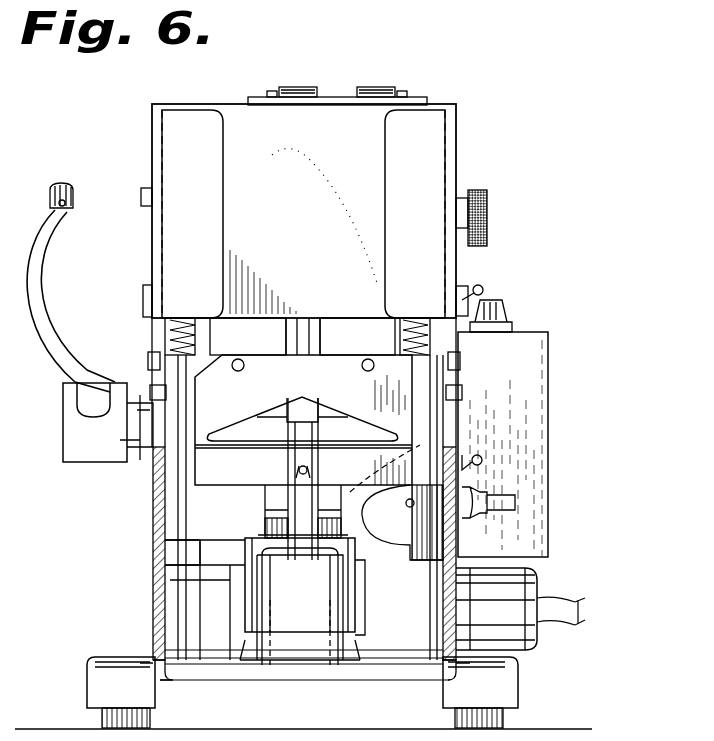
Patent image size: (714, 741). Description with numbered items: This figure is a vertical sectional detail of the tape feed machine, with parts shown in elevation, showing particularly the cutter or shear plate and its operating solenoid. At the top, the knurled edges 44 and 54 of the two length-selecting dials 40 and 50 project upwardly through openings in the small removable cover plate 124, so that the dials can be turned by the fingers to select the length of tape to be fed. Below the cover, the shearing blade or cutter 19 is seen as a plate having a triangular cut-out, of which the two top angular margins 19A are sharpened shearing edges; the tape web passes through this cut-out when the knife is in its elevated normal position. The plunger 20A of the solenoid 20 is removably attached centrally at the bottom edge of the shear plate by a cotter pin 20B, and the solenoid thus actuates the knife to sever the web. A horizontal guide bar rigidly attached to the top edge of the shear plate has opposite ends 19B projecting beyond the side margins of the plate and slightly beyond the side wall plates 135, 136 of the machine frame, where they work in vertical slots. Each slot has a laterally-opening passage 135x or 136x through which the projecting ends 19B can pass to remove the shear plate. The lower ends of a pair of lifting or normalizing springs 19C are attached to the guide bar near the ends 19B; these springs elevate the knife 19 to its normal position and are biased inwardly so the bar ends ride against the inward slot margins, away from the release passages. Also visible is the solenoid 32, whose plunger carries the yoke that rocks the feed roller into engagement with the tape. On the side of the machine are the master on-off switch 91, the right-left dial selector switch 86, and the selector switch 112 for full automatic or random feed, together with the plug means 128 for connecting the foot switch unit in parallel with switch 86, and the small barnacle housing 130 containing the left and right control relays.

The removable cover plate 124 is at (230, 112).
The dial 40 is at (310, 84).
The knurled rim portion 44 is at (272, 91).
The dial 50 is at (381, 78).
The knurled edge 54 is at (405, 90).
The selector switch 112 is at (483, 287).
The side wall plate 135 is at (158, 335).
The side wall plate 136 is at (452, 342).
The lifting or normalizing springs 19C is at (180, 335).
The projecting ends of guide bar 19B is at (148, 360).
The shearing blade or cutter 19 is at (266, 394).
The top angular margins 19A is at (330, 413).
The laterally-opening passage 135x is at (172, 399).
The laterally-opening passage 136x is at (464, 394).
The barnacle housing 130 is at (530, 440).
The master on-off switch 91 is at (482, 462).
The right-left dial selector switch 86 is at (500, 512).
The cotter pin 20B is at (299, 472).
The plunger 20A is at (300, 498).
The solenoid 20 is at (312, 603).
The solenoid 32 is at (366, 589).
The plug means 128 is at (553, 582).